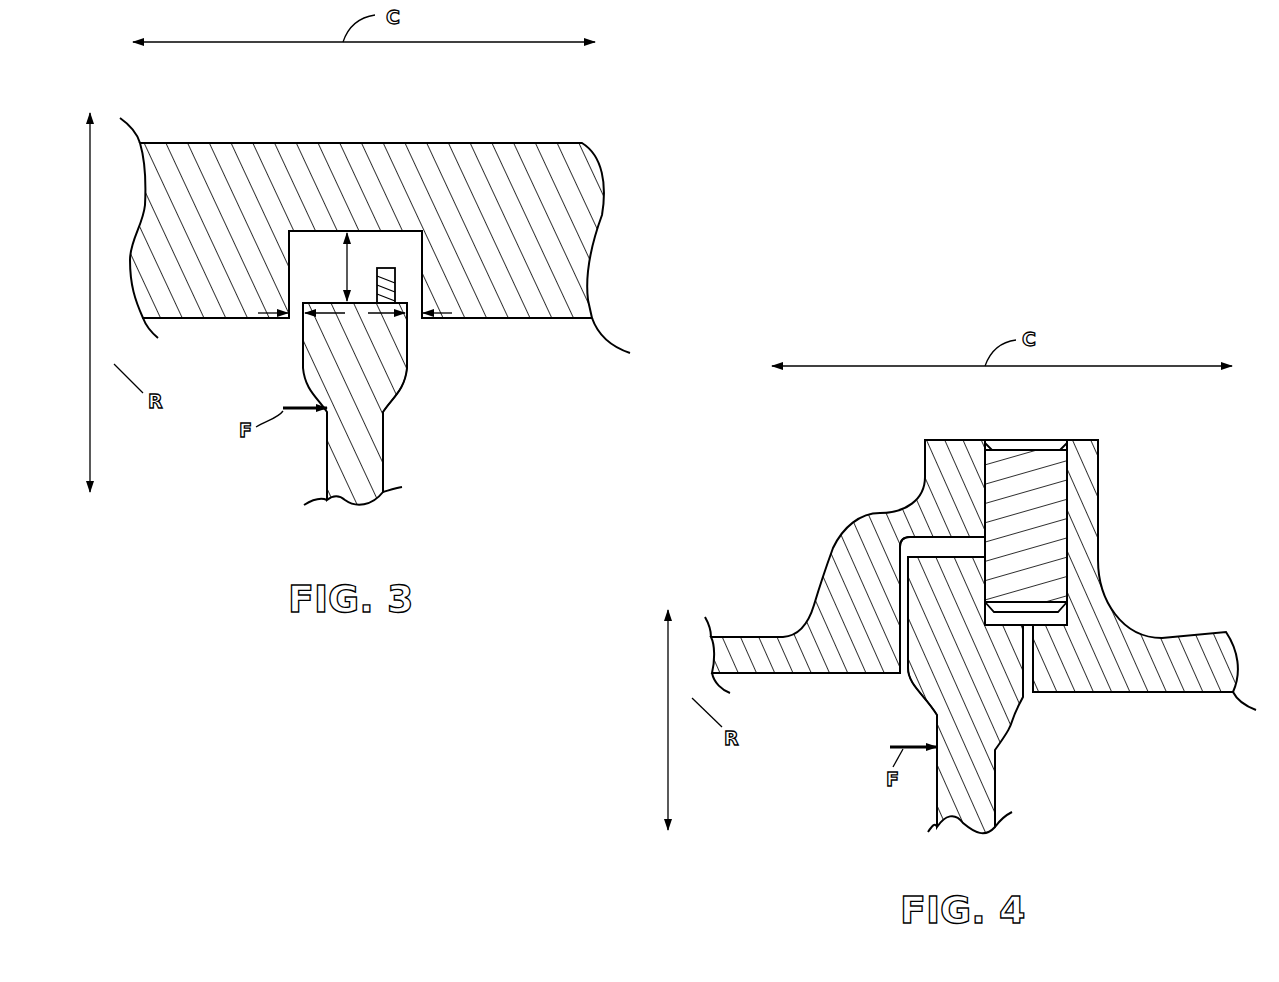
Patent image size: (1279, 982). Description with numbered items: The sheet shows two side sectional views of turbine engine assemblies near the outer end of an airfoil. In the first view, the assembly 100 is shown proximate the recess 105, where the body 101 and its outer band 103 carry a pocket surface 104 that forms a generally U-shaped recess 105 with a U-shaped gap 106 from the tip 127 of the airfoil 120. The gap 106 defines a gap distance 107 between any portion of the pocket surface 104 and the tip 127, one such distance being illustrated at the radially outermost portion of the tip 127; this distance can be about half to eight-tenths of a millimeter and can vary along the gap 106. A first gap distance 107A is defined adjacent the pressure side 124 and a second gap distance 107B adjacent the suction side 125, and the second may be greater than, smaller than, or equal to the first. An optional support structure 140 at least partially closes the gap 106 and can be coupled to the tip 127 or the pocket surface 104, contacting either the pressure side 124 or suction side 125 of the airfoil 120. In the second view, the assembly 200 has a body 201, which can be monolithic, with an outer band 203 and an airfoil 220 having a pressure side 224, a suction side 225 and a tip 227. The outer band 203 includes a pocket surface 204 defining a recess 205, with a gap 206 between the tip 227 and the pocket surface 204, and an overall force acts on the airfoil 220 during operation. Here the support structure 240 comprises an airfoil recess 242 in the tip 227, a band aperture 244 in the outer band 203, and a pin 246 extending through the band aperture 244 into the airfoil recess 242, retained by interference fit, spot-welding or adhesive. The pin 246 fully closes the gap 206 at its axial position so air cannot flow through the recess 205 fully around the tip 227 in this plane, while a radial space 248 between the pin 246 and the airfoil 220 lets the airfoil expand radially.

In FIG. 3, the assembly 100 is at (655, 138).
In FIG. 3, the rotor disk 101 is at (608, 233).
In FIG. 3, the disk body 103 is at (458, 148).
In FIG. 3, the pocket surface 104 is at (316, 236).
In FIG. 3, the recess 105 is at (296, 319).
In FIG. 3, the gap 106 is at (415, 314).
In FIG. 3, the gap distance 107 is at (348, 270).
In FIG. 3, the first gap distance 107A is at (258, 316).
In FIG. 3, the second gap distance 107B is at (450, 318).
In FIG. 3, the airfoil 120 is at (322, 467).
In FIG. 3, the pressure side 124 is at (325, 443).
In FIG. 3, the suction side 125 is at (383, 450).
In FIG. 3, the tip 127 is at (373, 377).
In FIG. 3, the support structure 140 is at (388, 260).
In FIG. 4, the assembly 200 is at (1122, 451).
In FIG. 4, the body 201 is at (1103, 554).
In FIG. 4, the outer band 203 is at (830, 605).
In FIG. 4, the pocket surface 204 is at (918, 542).
In FIG. 4, the recess 205 is at (917, 548).
In FIG. 4, the gap 206 is at (964, 542).
In FIG. 4, the airfoil 220 is at (927, 805).
In FIG. 4, the pressure side 224 is at (937, 787).
In FIG. 4, the suction side 225 is at (1008, 790).
In FIG. 4, the tip 227 is at (952, 652).
In FIG. 4, the support structure 240 is at (1050, 426).
In FIG. 4, the airfoil recess 242 is at (1013, 628).
In FIG. 4, the band aperture 244 is at (1055, 612).
In FIG. 4, the pin 246 is at (1058, 486).
In FIG. 4, the radial space 248 is at (1030, 626).